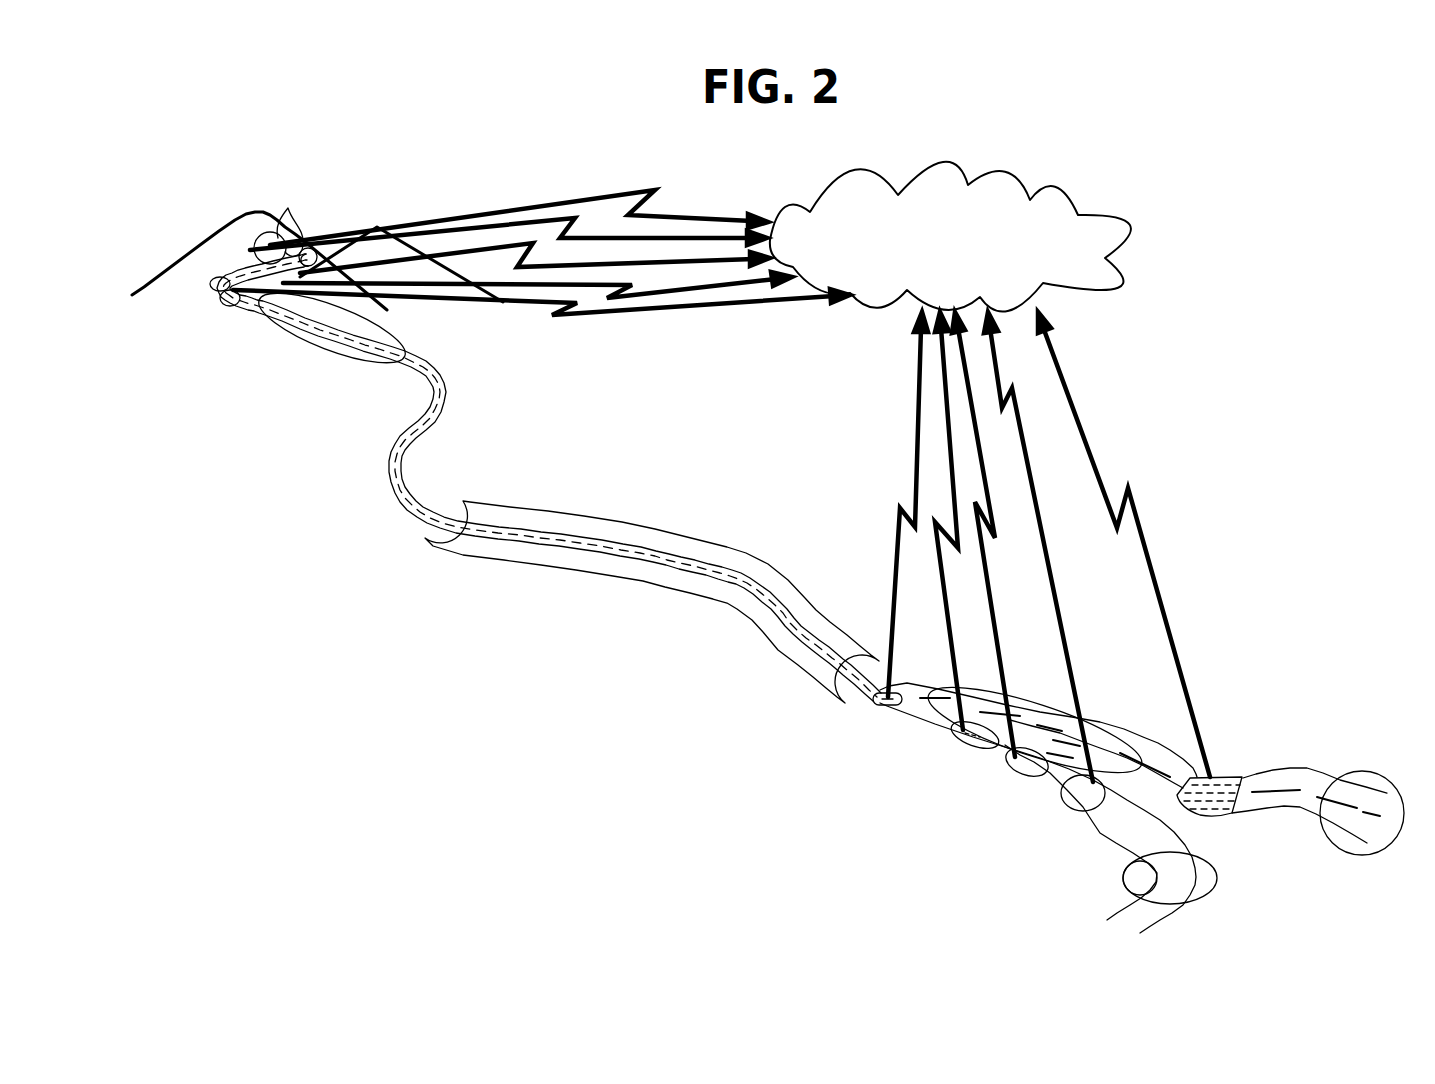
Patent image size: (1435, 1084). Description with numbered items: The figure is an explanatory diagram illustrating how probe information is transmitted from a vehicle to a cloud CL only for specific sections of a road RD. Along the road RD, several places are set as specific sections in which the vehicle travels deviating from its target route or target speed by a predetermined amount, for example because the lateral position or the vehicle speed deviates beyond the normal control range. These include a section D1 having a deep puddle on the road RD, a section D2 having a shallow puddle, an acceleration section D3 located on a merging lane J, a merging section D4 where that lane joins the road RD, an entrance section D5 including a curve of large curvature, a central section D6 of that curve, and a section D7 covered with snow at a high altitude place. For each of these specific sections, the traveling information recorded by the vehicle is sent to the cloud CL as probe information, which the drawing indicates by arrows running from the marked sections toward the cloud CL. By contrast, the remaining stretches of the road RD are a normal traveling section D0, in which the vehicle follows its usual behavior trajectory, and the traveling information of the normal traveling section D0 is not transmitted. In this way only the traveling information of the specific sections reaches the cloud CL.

The cloud CL is at (1137, 245).
The road RD is at (802, 593).
The merging lane J is at (1177, 865).
The normal traveling section D0 is at (327, 350).
The section having a deep puddle D1 is at (1230, 777).
The section having a shallow puddle D2 is at (880, 706).
The acceleration section D3 is at (1060, 795).
The merging section D4 is at (963, 748).
The entrance section D5 is at (228, 306).
The central section of the curve D6 is at (214, 284).
The section covered with snow D7 is at (292, 226).